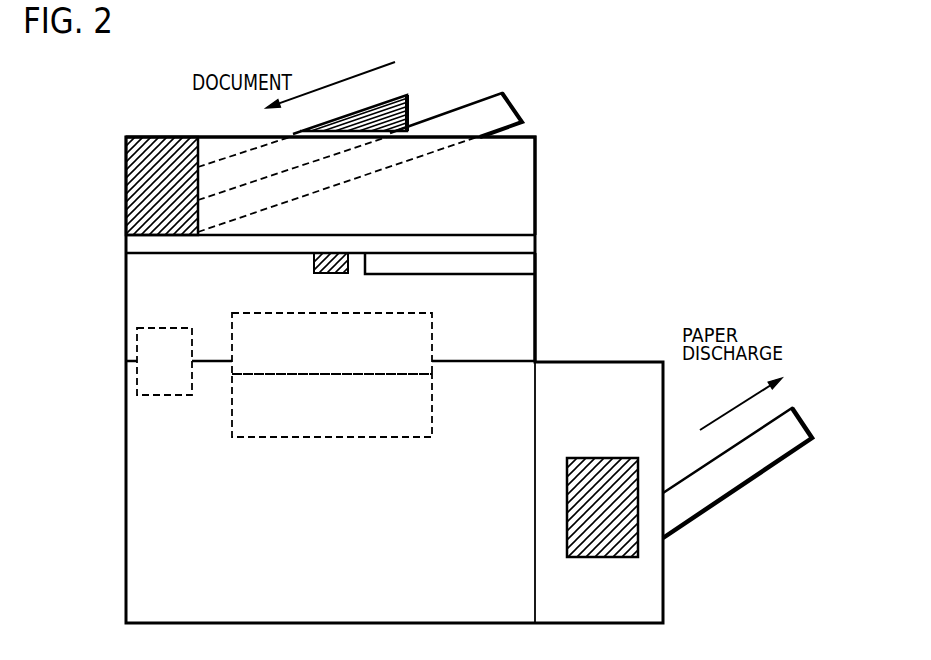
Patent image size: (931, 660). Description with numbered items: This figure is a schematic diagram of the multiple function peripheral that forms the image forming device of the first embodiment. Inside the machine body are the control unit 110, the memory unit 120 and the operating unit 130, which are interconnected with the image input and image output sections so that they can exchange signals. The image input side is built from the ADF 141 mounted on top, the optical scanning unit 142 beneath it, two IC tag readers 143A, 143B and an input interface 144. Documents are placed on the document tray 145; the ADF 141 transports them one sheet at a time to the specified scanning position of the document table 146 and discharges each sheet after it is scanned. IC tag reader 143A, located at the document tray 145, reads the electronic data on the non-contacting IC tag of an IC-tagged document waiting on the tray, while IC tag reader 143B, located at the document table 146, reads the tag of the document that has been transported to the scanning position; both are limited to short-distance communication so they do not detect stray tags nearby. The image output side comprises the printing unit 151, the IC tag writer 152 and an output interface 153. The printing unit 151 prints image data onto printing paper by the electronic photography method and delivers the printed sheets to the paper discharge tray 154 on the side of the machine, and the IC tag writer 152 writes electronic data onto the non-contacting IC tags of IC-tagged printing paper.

The control unit 110 is at (435, 333).
The memory unit 120 is at (435, 420).
The operating unit 130 is at (537, 268).
The ADF (Auto Document Feeder) 141 is at (537, 183).
The optical scanning unit 142 is at (537, 338).
The IC tag reader 143A is at (125, 160).
The IC tag reader 143B is at (333, 253).
The input interface 144 is at (182, 394).
The output interface 153 is at (158, 395).
The document tray 145 is at (514, 101).
The document table 146 is at (537, 242).
The printing unit 151 is at (126, 497).
The IC tag writer 152 is at (638, 549).
The paper discharge tray 154 is at (713, 507).